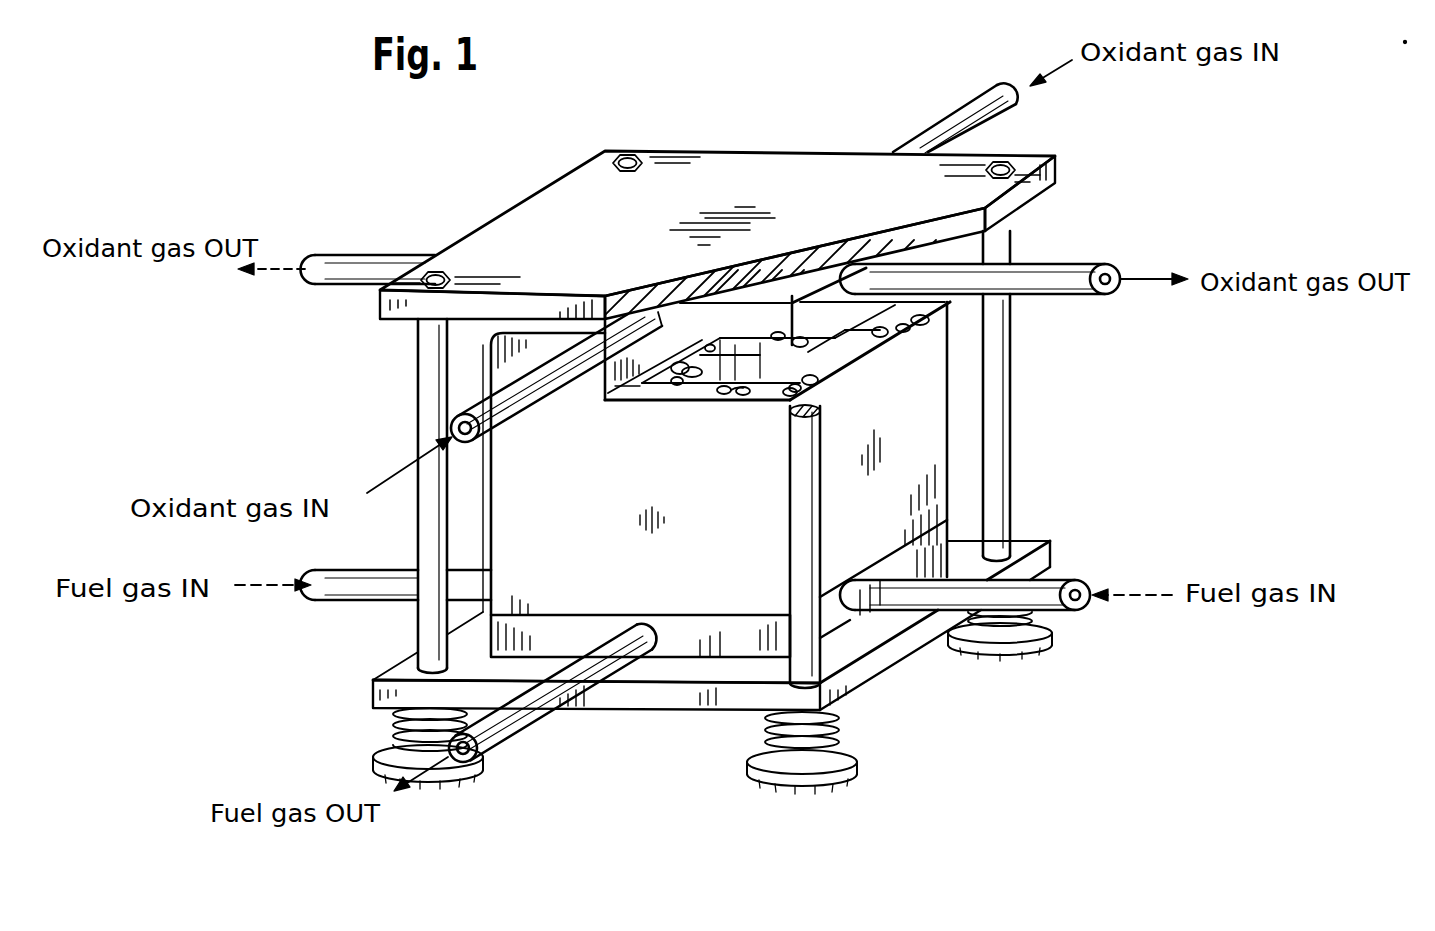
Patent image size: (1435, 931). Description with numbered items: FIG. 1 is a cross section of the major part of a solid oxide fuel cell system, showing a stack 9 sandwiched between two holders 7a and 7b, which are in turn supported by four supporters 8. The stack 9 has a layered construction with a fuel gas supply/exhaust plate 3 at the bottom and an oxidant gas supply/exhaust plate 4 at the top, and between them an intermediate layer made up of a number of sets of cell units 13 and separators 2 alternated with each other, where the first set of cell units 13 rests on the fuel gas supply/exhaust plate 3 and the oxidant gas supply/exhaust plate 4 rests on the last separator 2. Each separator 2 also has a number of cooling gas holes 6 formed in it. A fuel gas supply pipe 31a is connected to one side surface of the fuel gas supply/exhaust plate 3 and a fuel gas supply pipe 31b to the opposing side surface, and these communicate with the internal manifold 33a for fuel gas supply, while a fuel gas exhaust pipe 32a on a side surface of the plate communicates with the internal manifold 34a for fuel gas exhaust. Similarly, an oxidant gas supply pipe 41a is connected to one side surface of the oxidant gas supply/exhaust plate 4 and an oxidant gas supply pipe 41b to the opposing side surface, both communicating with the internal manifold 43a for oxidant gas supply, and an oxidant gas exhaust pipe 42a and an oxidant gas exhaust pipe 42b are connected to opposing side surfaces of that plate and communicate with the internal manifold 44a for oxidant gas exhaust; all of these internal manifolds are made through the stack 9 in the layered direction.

The separator 2 is at (657, 392).
The fuel gas supply/exhaust plate 3 is at (712, 636).
The oxidant gas supply/exhaust plate 4 is at (843, 372).
The cooling gas holes 6 is at (800, 385).
The holder 7a is at (548, 205).
The holder 7b is at (900, 660).
The supporter 8 is at (995, 480).
The stack 9 is at (486, 474).
The cell unit 13 is at (752, 358).
The fuel gas supply pipe 31a is at (1070, 590).
The fuel gas supply pipe 31b is at (370, 592).
The fuel gas exhaust pipe 32a is at (525, 714).
The internal manifold for fuel gas supply 33a is at (790, 345).
The internal manifold for fuel gas exhaust 34a is at (755, 392).
The oxidant gas supply pipe 41a is at (534, 398).
The oxidant gas supply pipe 41b is at (955, 120).
The oxidant gas exhaust pipe 42a is at (1075, 268).
The oxidant gas exhaust pipe 42b is at (355, 285).
The internal manifold for oxidant gas supply 43a is at (697, 378).
The internal manifold for oxidant gas exhaust 44a is at (815, 382).